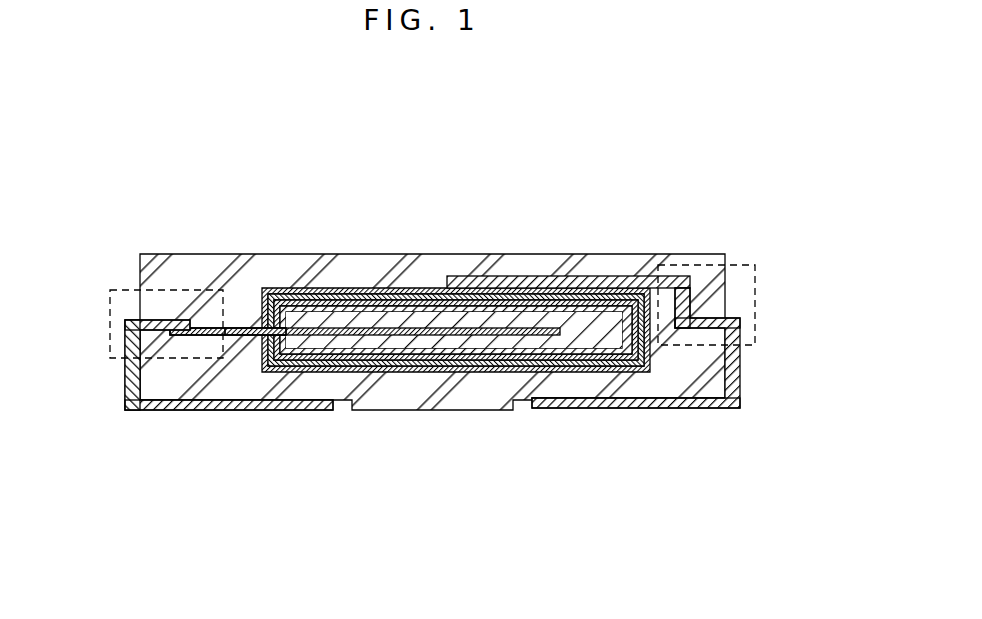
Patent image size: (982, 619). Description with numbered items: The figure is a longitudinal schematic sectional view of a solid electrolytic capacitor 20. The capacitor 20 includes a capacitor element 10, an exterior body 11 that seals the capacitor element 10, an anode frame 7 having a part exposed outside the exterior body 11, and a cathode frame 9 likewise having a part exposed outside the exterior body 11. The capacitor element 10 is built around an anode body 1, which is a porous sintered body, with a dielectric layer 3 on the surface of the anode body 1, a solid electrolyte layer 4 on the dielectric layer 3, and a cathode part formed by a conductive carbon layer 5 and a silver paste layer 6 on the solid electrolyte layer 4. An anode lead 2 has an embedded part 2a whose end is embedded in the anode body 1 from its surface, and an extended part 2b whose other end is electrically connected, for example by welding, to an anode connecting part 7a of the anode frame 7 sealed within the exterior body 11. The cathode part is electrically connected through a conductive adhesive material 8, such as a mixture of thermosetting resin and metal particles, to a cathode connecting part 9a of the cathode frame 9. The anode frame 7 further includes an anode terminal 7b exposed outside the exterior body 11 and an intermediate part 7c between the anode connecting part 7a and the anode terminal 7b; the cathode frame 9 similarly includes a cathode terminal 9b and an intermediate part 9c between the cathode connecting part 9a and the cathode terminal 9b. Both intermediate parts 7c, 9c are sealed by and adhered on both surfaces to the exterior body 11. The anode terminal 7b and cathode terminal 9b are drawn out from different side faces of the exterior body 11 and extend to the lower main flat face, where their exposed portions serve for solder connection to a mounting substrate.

The anode body 1 is at (438, 328).
The anode lead 2 is at (160, 212).
The embedded part 2a is at (250, 325).
The extended part 2b is at (202, 328).
The dielectric layer 3 is at (367, 311).
The solid electrolyte layer 4 is at (330, 304).
The conductive carbon layer 5 is at (308, 298).
The silver paste layer 6 is at (283, 292).
The anode frame 7 is at (47, 285).
The anode connecting part 7a is at (148, 320).
The anode terminal 7b is at (195, 410).
The intermediate part 7c is at (136, 340).
The conductive adhesive material 8 is at (503, 282).
The cathode frame 9 is at (825, 282).
The cathode connecting part 9a is at (608, 283).
The cathode terminal 9b is at (648, 408).
The intermediate part 9c is at (680, 302).
The capacitor element 10 is at (183, 165).
The exterior body 11 is at (140, 269).
The solid electrolytic capacitor 20 is at (434, 283).